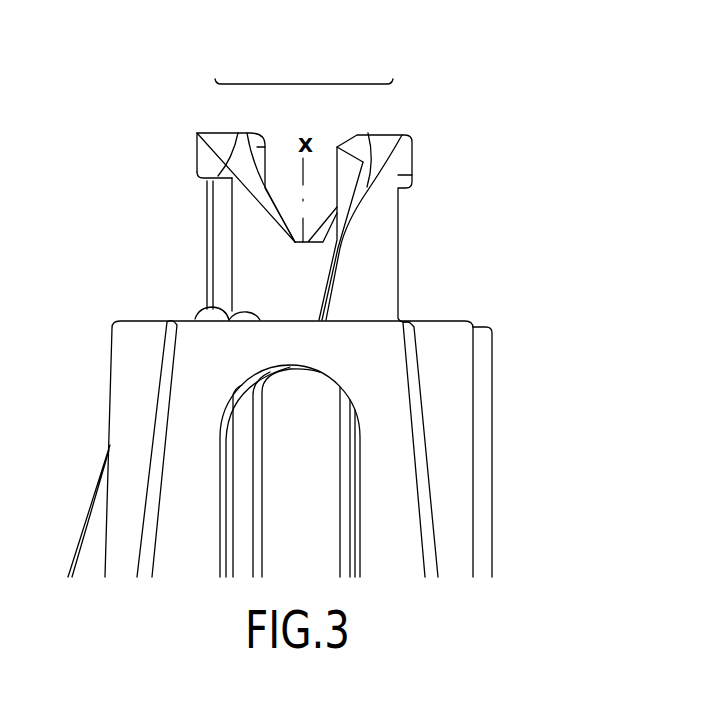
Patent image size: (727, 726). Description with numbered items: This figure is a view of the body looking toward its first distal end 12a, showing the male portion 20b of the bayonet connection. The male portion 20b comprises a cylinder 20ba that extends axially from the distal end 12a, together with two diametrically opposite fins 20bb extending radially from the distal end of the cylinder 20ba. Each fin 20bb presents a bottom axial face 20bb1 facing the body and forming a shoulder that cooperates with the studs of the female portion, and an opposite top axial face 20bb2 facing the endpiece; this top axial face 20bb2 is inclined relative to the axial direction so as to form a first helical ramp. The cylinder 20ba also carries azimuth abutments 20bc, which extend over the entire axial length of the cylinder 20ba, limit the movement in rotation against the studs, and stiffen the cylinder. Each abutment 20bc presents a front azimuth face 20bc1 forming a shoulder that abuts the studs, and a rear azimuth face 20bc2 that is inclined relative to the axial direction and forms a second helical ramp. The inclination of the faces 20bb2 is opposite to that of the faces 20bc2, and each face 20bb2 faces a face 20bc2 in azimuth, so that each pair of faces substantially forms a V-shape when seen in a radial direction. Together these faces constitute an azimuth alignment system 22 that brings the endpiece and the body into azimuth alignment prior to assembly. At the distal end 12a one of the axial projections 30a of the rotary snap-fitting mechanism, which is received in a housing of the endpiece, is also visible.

The first distal end 12a is at (462, 348).
The male portion 20b is at (410, 255).
The cylinder 20ba is at (242, 282).
The fins 20bb is at (197, 160).
The bottom axial face 20bb1 is at (203, 183).
The top axial face 20bb2 is at (238, 133).
The azimuth abutments 20bc is at (207, 236).
The front azimuth face 20bc1 is at (209, 264).
The rear azimuth face 20bc2 is at (368, 133).
The azimuth alignment system 22 is at (305, 83).
The axial projections 30a is at (235, 315).